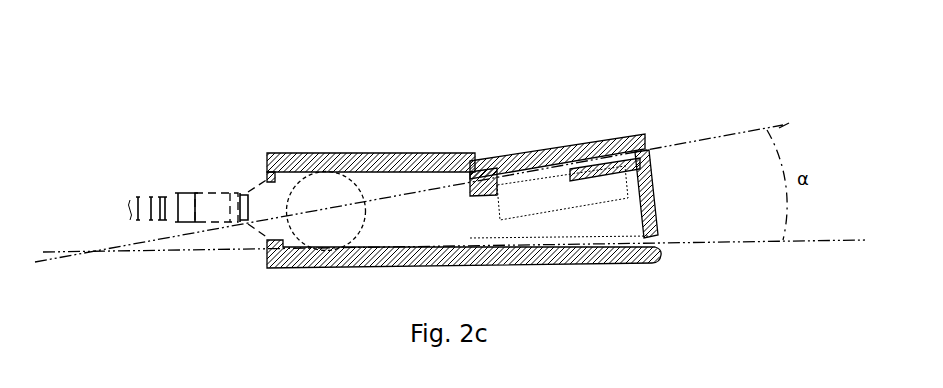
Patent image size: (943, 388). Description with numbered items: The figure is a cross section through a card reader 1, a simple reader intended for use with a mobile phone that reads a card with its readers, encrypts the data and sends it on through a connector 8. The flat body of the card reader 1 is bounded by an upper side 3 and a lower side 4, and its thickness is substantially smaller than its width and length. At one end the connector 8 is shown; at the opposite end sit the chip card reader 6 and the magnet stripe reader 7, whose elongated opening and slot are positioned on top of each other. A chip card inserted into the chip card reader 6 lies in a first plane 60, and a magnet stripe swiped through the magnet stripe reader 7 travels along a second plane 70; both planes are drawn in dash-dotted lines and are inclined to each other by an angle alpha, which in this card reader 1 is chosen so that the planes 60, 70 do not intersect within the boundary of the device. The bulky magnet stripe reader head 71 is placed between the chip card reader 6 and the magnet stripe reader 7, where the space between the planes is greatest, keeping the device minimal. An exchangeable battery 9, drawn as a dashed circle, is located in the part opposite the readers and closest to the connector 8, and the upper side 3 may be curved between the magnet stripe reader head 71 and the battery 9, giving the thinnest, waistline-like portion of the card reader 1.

The card reader 1 is at (281, 90).
The upper side 3 is at (478, 158).
The lower side 4 is at (337, 270).
The chip card reader 6 is at (678, 248).
The magnet stripe reader 7 is at (650, 147).
The connector 8 is at (188, 190).
The battery 9 is at (362, 180).
The first plane 60 is at (862, 243).
The second plane 70 is at (783, 126).
The magnet stripe reader head 71 is at (562, 170).